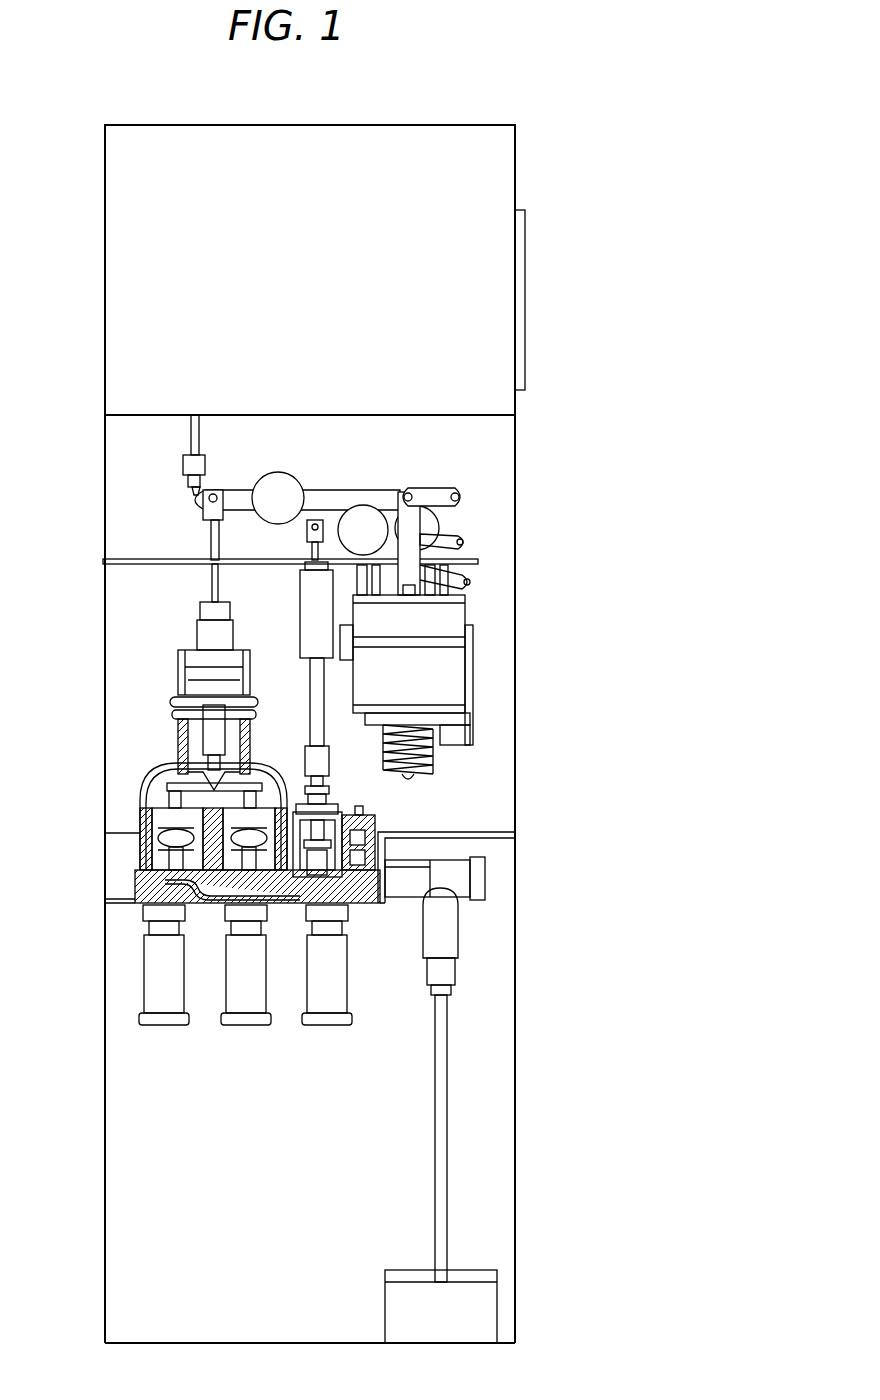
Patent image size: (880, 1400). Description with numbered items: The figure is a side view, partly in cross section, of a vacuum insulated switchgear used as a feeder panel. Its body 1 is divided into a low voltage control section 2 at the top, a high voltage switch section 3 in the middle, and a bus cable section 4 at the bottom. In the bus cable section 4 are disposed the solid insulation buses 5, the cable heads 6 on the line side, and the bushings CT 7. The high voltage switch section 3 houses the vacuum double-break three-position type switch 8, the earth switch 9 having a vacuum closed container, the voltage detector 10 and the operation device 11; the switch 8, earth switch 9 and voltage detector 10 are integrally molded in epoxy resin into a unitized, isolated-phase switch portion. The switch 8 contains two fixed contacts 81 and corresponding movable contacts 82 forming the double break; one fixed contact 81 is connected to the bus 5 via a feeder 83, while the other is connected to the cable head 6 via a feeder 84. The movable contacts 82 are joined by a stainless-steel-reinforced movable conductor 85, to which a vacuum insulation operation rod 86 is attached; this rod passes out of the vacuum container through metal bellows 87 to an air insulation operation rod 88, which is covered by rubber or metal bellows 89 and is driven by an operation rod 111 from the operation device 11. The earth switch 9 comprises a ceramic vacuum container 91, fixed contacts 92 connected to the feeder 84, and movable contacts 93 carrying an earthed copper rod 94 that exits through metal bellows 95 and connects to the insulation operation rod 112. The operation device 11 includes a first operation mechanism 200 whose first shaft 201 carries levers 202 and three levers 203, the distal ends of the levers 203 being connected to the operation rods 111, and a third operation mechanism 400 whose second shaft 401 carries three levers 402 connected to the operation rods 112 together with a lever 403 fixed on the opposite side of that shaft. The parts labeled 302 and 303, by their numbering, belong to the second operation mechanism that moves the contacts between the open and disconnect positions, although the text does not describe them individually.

The body 1 is at (532, 198).
The low voltage control section 2 is at (490, 338).
The high voltage switch section 3 is at (495, 440).
The bus cable section 4 is at (490, 1030).
The solid insulation bus 5 is at (145, 985).
The cable head 6 is at (487, 878).
The bushing CT 7 is at (490, 1310).
The vacuum double-break three-position type switch 8 is at (134, 846).
The earth switch 9 is at (342, 802).
The voltage detector 10 is at (380, 830).
The operation device 11 is at (489, 605).
The fixed contact 81 is at (150, 856).
The movable contact 82 is at (152, 815).
The feeder 83 is at (150, 893).
The feeder 84 is at (386, 905).
The movable conductor 85 is at (165, 785).
The vacuum insulation operation rod 86 is at (177, 752).
The metal bellows 87 is at (175, 720).
The air insulation operation rod 88 is at (190, 655).
The bellows 89 is at (178, 680).
The vacuum container 91 is at (285, 870).
The fixed contact 92 is at (318, 870).
The movable contact 93 is at (325, 870).
The earthed rod 94 is at (305, 775).
The metal bellows 95 is at (295, 812).
The operation rod 111 is at (212, 585).
The insulation operation rod 112 is at (300, 660).
The first operation mechanism 200 is at (464, 688).
The first shaft 201 is at (278, 473).
The lever 202 is at (218, 490).
The lever 203 is at (410, 490).
The link 302 is at (455, 493).
The roller 303 is at (438, 530).
The third operation mechanism 400 is at (474, 655).
The second shaft 401 is at (363, 505).
The lever 402 is at (315, 520).
The lever 403 is at (465, 541).